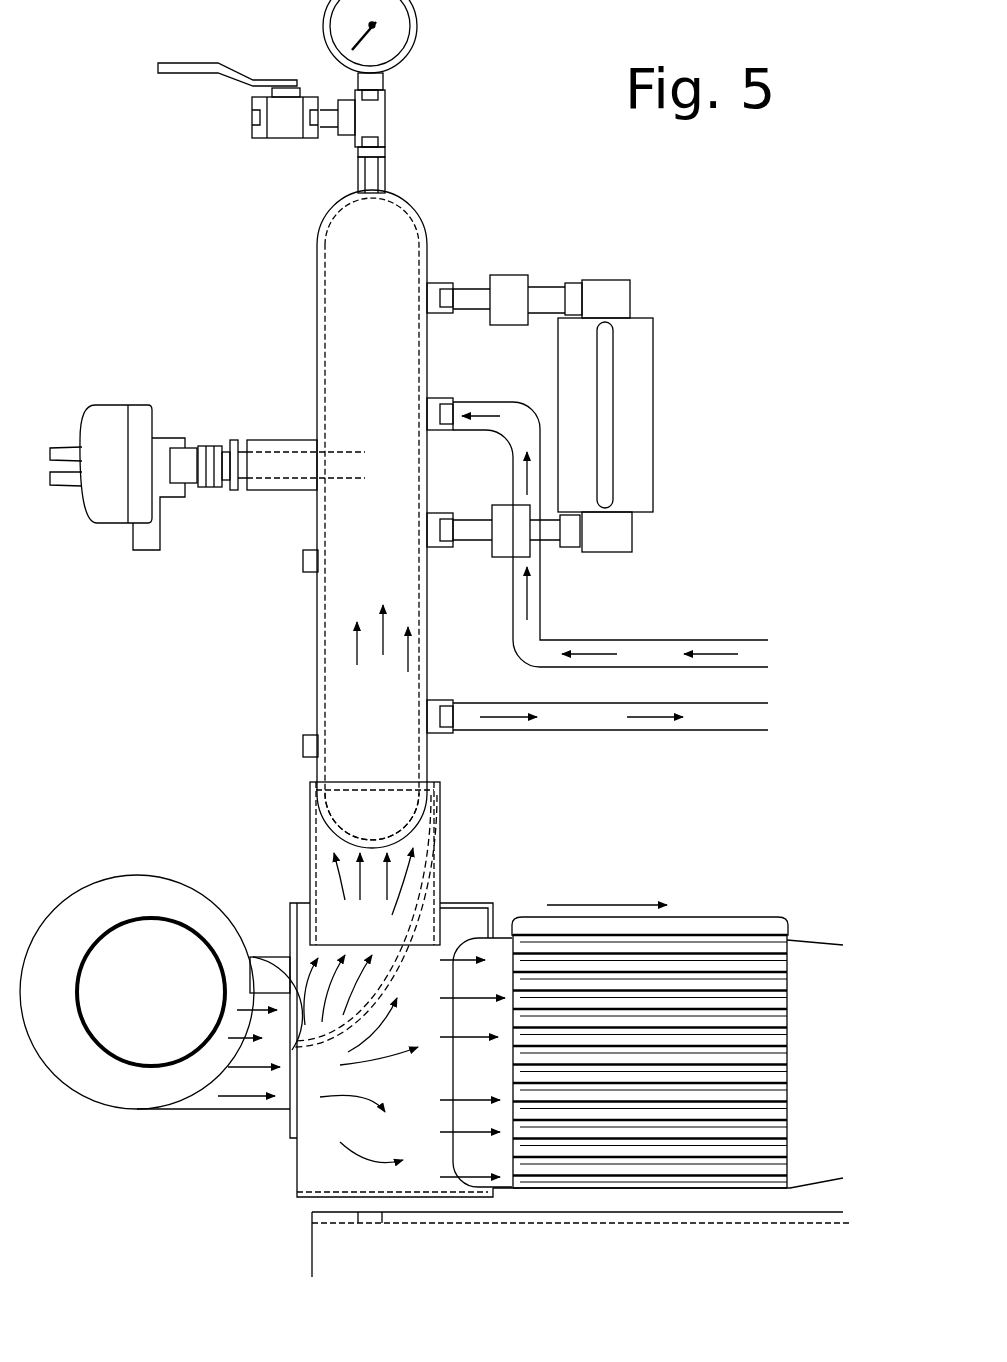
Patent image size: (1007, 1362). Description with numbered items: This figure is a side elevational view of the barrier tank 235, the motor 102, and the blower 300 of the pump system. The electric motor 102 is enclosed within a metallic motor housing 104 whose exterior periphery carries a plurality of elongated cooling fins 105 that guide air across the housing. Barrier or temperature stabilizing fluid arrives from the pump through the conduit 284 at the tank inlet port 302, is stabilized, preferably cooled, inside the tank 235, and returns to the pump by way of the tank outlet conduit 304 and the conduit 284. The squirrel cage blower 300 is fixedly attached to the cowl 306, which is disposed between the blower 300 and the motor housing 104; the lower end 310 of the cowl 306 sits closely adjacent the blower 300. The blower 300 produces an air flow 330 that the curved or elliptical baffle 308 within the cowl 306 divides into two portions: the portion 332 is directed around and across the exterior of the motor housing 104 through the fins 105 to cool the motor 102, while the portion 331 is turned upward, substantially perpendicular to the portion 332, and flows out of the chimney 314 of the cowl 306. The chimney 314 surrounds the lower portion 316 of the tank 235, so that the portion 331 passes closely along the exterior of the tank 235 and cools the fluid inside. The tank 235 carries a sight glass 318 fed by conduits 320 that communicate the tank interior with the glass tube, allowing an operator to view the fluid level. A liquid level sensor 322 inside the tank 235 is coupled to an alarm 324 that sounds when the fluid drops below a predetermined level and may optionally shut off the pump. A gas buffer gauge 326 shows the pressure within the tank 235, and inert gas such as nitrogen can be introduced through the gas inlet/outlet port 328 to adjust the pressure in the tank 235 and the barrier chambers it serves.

The electric motor 102 is at (837, 1150).
The motor housing 104 is at (822, 947).
The cooling fins 105 is at (787, 992).
The barrier tank 235 is at (425, 232).
The conduit 284 is at (595, 645).
The blower 300 is at (88, 900).
The tank inlet port 302 is at (438, 400).
The tank outlet conduit 304 is at (437, 700).
The cowl 306 is at (468, 903).
The baffle 308 is at (398, 975).
The lower end of cowl 310 is at (297, 993).
The chimney 314 is at (440, 795).
The lower portion of tank 316 is at (325, 808).
The sight glass 318 is at (605, 390).
The conduits 320 is at (545, 290).
The liquid level sensor 322 is at (368, 452).
The alarm 324 is at (138, 420).
The gas buffer gauge 326 is at (397, 38).
The gas inlet/outlet port 328 is at (385, 185).
The air flow 330 is at (230, 1097).
The air flow portion 331 is at (315, 883).
The air flow portion 332 is at (338, 1093).